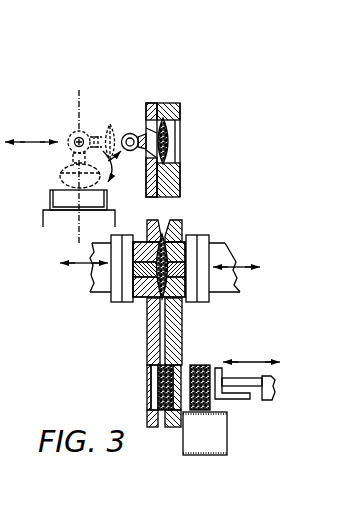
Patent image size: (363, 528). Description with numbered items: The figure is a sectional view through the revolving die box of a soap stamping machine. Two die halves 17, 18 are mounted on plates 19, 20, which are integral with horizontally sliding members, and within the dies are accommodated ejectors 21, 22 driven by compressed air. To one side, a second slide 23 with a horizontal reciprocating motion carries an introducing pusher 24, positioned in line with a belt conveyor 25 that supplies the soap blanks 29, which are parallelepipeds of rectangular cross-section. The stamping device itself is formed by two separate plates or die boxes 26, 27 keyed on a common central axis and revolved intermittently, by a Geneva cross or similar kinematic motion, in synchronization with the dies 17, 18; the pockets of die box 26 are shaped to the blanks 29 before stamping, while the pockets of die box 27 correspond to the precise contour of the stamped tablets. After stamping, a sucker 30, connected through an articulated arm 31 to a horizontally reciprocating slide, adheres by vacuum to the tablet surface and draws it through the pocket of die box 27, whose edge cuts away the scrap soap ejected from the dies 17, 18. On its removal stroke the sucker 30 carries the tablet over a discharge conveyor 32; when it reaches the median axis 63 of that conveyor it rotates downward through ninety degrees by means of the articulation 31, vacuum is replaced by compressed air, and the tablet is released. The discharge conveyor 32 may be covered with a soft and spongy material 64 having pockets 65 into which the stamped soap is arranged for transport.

The die half 17 is at (181, 298).
The die half 18 is at (140, 298).
The plate 19 is at (196, 242).
The plate 20 is at (127, 242).
The ejector 21 is at (182, 270).
The ejector 22 is at (140, 268).
The second slide 23 is at (268, 400).
The introducing pusher 24 is at (247, 400).
The belt conveyor 25 is at (213, 455).
The rotating die box 26 is at (172, 103).
The rotating die box 27 is at (155, 96).
The soap blank 29 is at (200, 366).
The sucker 30 is at (142, 135).
The articulated arm 31 is at (71, 138).
The discharge conveyor 32 is at (43, 212).
The median axis 63 is at (67, 165).
The soft and spongy material 64 is at (50, 197).
The pocket 65 is at (64, 183).